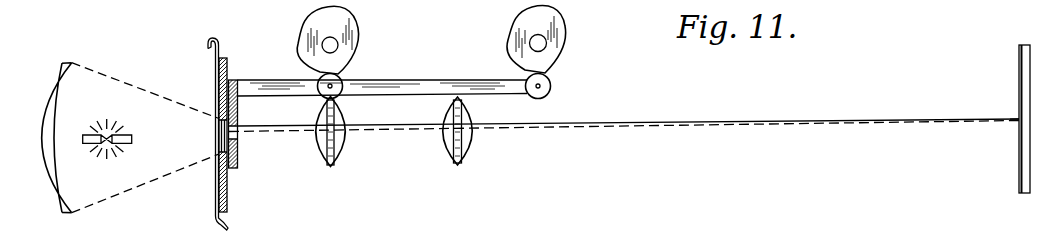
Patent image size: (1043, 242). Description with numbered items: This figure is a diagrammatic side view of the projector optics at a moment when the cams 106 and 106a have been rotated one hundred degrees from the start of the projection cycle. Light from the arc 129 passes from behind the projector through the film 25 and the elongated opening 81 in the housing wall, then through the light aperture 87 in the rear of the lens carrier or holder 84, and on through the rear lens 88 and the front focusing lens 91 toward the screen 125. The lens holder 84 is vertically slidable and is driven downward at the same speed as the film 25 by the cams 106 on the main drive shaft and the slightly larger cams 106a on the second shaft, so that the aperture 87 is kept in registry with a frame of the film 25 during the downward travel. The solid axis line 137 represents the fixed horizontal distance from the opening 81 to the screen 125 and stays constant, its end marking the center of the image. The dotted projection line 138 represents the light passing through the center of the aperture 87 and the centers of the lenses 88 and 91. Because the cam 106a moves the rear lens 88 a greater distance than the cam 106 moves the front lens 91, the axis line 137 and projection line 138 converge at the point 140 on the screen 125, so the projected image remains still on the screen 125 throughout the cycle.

The film 25 is at (220, 227).
The elongated inwardly divergent opening 81 is at (223, 143).
The lens carrier or holder 84 is at (439, 75).
The light aperture 87 is at (238, 140).
The lens 88 is at (332, 167).
The second or focusing lens 91 is at (459, 167).
The cams 106 is at (562, 27).
The cams 106a is at (352, 38).
The screen 125 is at (1019, 70).
The arc 129 is at (86, 143).
The axis line 137 is at (650, 122).
The projection line 138 is at (522, 128).
The point 140 is at (1019, 118).